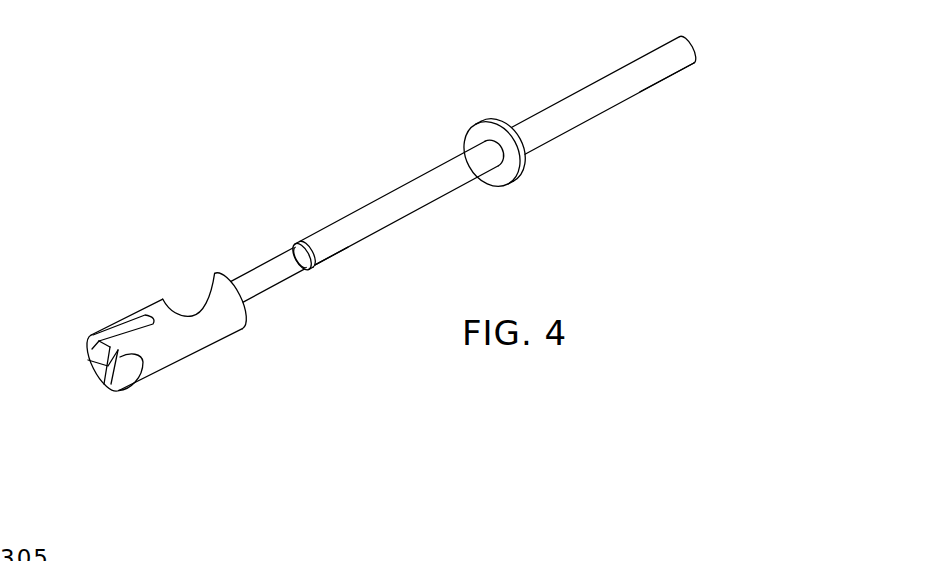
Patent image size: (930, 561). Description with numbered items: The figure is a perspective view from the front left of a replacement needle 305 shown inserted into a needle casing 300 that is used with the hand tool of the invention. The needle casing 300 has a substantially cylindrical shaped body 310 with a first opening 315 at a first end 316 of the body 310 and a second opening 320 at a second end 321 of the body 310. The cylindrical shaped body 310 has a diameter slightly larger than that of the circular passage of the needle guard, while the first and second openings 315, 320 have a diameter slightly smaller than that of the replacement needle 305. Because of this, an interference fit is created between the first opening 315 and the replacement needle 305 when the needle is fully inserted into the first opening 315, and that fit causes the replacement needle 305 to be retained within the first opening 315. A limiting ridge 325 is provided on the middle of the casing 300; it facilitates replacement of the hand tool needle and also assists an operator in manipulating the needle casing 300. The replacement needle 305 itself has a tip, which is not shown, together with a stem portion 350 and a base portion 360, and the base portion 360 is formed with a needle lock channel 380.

The needle casing 300 is at (406, 110).
The replacement needle 305 is at (138, 284).
The cylindrical shaped body 310 is at (420, 212).
The first opening 315 is at (301, 242).
The first end 316 is at (327, 253).
The second opening 320 is at (720, 36).
The second end 321 is at (673, 67).
The limiting ridge 325 is at (512, 180).
The stem portion 350 is at (282, 281).
The base portion 360 is at (138, 382).
The needle lock channel 380 is at (188, 292).